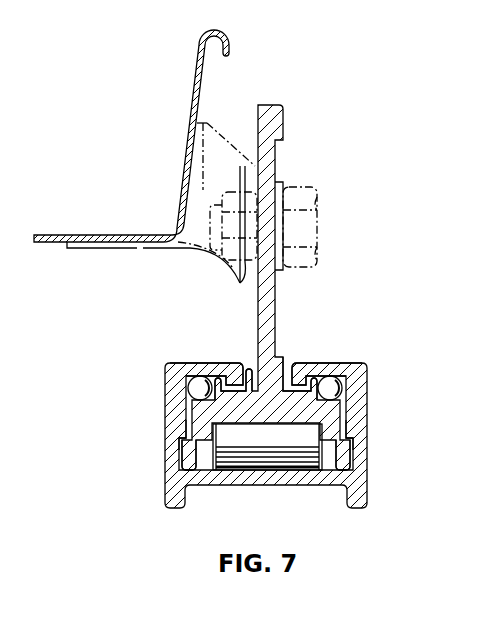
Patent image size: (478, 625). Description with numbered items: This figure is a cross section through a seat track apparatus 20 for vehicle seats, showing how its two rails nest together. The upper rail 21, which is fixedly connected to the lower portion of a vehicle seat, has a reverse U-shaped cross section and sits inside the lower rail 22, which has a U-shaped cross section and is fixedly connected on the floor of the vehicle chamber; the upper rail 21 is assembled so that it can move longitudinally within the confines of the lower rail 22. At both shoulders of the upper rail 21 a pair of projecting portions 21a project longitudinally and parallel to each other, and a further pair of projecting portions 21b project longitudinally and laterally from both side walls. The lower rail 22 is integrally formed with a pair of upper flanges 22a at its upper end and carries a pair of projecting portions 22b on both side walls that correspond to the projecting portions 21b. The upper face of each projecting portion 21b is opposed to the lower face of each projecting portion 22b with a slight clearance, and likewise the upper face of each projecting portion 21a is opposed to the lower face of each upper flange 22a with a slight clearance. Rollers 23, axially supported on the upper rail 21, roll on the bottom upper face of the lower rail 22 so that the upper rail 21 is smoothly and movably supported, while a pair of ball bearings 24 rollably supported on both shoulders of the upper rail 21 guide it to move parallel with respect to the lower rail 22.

The seat track apparatus 20 is at (320, 328).
The upper rail 21 is at (270, 370).
The projecting portions 21a is at (222, 376).
The projecting portions 21b is at (185, 460).
The lower rail 22 is at (307, 477).
The upper flanges 22a is at (205, 372).
The projecting portions 22b is at (186, 432).
The rollers 23 is at (257, 453).
The ball bearings 24 is at (195, 391).